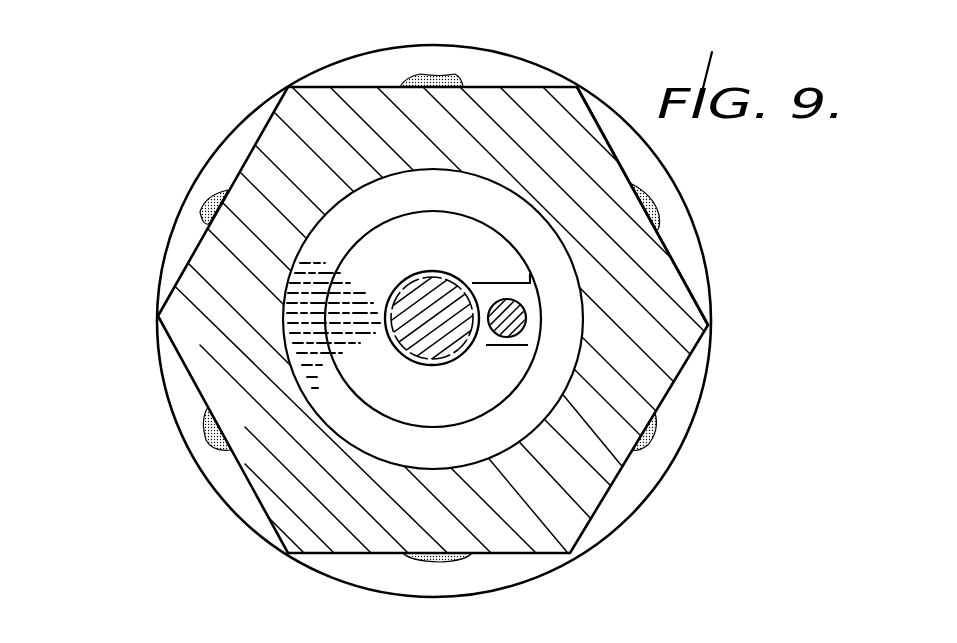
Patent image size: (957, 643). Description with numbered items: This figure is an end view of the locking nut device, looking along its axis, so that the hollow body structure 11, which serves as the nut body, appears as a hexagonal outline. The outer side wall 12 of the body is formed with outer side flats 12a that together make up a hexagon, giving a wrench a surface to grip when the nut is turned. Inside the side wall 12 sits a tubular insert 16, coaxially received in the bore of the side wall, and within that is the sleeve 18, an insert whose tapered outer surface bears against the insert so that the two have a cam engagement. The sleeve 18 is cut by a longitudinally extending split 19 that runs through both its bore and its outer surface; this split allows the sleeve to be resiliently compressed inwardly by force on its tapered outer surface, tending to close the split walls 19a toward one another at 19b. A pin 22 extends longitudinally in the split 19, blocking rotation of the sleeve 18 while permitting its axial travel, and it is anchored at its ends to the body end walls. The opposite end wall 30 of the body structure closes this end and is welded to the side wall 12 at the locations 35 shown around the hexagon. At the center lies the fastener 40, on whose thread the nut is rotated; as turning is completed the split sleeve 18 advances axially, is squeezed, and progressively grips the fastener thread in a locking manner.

The hollow body structure 11 is at (190, 262).
The outer side wall 12 is at (285, 473).
The outer side flats 12a is at (677, 265).
The tubular insert 16 is at (280, 362).
The sleeve 18 is at (345, 248).
The split 19 is at (487, 346).
The split walls 19a is at (489, 285).
The split wall closing location 19b is at (509, 352).
The pin 22 is at (527, 320).
The opposite end wall 30 is at (675, 415).
The weld locations 35 is at (202, 427).
The fastener 40 is at (415, 272).